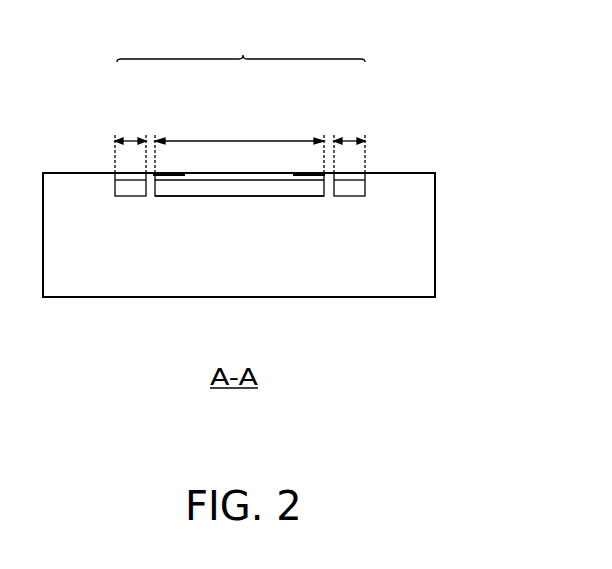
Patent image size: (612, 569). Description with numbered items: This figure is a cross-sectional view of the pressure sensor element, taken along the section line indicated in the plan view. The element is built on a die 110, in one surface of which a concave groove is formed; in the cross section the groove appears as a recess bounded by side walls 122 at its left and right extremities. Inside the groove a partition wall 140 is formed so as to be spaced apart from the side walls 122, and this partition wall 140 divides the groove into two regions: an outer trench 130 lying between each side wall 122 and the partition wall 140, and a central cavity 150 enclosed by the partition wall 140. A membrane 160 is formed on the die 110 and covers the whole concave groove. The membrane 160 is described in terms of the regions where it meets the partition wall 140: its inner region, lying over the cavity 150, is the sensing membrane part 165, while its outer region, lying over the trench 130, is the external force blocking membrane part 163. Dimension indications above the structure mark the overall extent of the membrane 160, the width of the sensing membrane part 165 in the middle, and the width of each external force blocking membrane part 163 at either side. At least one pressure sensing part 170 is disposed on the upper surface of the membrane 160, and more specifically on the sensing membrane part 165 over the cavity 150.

The die 110 is at (420, 203).
The side walls 122 is at (118, 194).
The trench 130 is at (350, 185).
The partition wall 140 is at (153, 183).
The cavity 150 is at (222, 187).
The membrane 160 is at (241, 43).
The external force blocking membrane part 163 is at (127, 136).
The sensing membrane part 165 is at (240, 140).
The pressure sensing part 170 is at (308, 178).